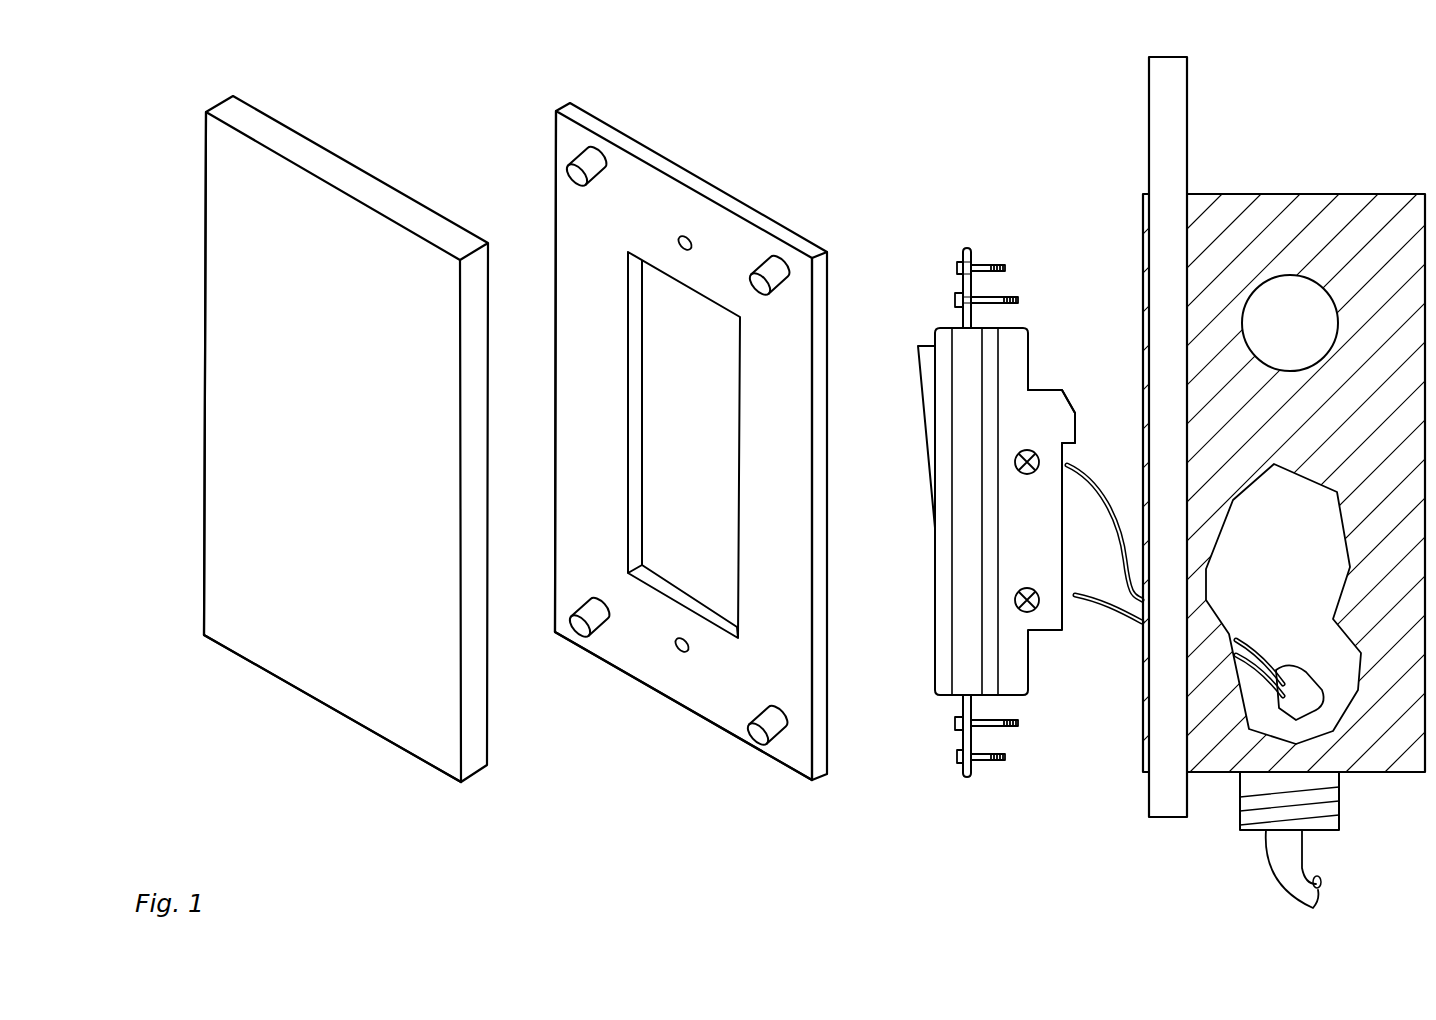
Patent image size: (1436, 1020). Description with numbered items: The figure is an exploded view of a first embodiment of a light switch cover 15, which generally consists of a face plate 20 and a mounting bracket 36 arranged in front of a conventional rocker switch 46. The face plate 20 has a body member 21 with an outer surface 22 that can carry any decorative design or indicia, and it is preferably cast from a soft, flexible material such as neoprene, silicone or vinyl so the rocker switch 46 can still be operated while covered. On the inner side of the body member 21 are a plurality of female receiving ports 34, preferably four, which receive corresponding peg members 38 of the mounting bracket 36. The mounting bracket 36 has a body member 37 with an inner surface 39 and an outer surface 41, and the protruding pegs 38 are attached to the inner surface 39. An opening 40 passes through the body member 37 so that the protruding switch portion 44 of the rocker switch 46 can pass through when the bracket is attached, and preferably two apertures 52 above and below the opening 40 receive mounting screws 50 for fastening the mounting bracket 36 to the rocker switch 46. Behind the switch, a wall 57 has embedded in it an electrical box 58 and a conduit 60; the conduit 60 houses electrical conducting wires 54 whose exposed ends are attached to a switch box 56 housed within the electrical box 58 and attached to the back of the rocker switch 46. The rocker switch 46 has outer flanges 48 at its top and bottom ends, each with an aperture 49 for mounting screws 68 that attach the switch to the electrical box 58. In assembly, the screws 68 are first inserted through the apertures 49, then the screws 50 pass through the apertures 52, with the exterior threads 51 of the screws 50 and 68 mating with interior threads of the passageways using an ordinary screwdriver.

The light switch cover 15 is at (928, 155).
The face plate 20 is at (357, 296).
The body member 21 is at (488, 768).
The outer surface 22 is at (272, 355).
The female receiving ports 34 is at (500, 678).
The mounting bracket 36 is at (613, 398).
The body member 37 is at (853, 477).
The peg members 38 is at (588, 170).
The inner surface 39 is at (598, 241).
The opening 40 is at (678, 508).
The outer surface 41 is at (830, 465).
The protruding switch portion 44 is at (922, 362).
The rocker switch 46 is at (997, 327).
The outer flanges 48 is at (967, 250).
The aperture 49 is at (960, 280).
The mounting screws 50 is at (985, 265).
The exterior threads 51 is at (1007, 297).
The apertures 52 is at (690, 237).
The electrical conducting wires 54 is at (1068, 468).
The switch box 56 is at (1067, 393).
The wall 57 is at (1146, 790).
The electrical box 58 is at (1378, 431).
The conduit 60 is at (1339, 798).
The mounting screws 68 is at (1020, 300).